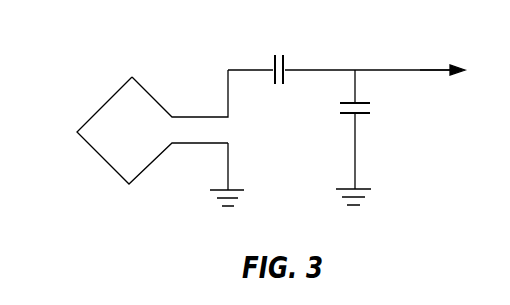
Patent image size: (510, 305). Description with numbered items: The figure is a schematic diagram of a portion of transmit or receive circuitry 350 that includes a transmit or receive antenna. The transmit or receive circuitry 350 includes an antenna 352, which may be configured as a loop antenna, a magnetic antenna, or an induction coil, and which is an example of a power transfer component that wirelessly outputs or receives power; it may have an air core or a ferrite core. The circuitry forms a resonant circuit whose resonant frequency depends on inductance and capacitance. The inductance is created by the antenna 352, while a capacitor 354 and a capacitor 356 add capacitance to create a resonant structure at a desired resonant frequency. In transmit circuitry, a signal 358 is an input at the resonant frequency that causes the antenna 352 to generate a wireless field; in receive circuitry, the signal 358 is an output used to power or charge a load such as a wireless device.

The transmit or receive circuitry 350 is at (152, 47).
The antenna 352 is at (105, 103).
The capacitor 354 is at (286, 60).
The capacitor 356 is at (361, 114).
The signal 358 is at (387, 69).